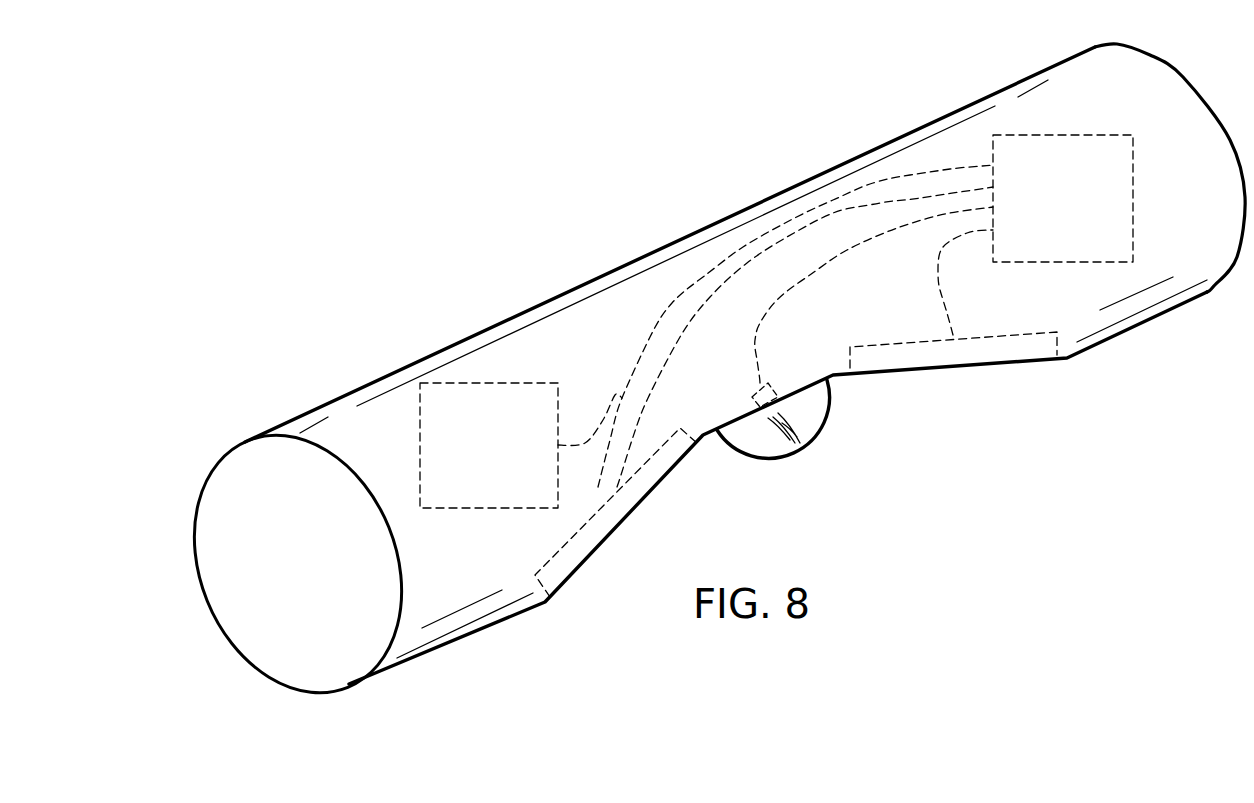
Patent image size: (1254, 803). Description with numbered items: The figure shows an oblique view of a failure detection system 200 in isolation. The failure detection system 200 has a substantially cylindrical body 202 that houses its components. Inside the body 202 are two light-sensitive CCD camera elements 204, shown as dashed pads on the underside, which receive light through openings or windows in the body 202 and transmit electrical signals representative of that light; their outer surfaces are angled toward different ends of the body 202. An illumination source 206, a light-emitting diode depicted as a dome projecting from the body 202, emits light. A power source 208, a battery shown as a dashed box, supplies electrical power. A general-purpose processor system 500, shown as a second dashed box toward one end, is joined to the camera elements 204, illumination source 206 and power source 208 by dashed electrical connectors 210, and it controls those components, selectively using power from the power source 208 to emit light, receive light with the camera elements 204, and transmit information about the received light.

The failure detection system 200 is at (701, 382).
The substantially cylindrical body 202 is at (1002, 103).
The camera element 204 is at (540, 566).
The illumination source 206 is at (777, 463).
The power source 208 is at (420, 441).
The electrical connector 210 is at (648, 343).
The general-purpose processor system 500 is at (1073, 134).